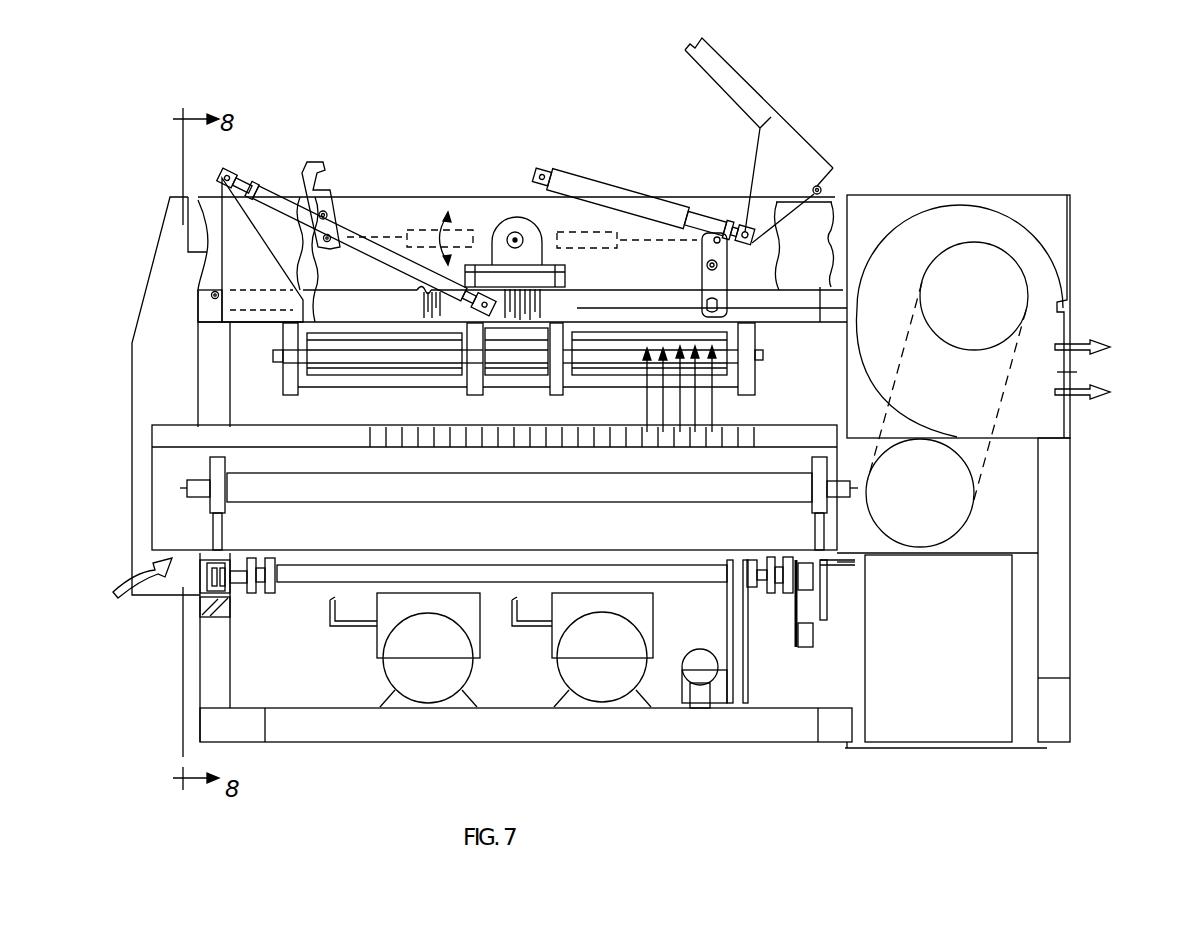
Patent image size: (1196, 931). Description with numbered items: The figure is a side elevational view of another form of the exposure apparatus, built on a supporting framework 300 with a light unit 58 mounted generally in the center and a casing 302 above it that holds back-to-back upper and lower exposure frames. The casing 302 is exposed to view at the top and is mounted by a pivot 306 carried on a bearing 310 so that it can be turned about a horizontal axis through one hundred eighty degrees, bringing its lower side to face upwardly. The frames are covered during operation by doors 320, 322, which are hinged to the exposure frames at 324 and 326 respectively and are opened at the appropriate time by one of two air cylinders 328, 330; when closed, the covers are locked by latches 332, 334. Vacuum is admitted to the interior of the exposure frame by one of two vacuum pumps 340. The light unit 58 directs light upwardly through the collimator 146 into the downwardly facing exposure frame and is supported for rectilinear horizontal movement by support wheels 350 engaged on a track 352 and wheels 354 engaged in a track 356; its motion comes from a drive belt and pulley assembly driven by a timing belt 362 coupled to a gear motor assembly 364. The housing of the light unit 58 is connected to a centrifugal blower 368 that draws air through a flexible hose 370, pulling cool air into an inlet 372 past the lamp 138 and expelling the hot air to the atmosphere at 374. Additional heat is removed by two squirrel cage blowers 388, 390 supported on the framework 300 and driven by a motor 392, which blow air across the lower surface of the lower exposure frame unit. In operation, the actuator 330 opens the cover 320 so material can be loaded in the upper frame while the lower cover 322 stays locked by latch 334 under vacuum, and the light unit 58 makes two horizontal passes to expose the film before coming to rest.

The light unit 58 is at (146, 464).
The lamp 138 is at (715, 495).
The collimator 146 is at (358, 428).
The supporting framework 300 is at (207, 647).
The casing 302 is at (406, 193).
The pivot 306 is at (498, 228).
The bearing 310 is at (515, 231).
The door 320 is at (740, 73).
The door 322 is at (803, 302).
The hinge 324 is at (827, 185).
The hinge 326 is at (212, 296).
The air cylinder 328 is at (340, 228).
The air cylinder 330 is at (593, 187).
The latch 332 is at (296, 172).
The latch 334 is at (698, 265).
The vacuum pump 340 is at (580, 662).
The support wheels 350 is at (787, 600).
The track 352 is at (810, 598).
The wheels 354 is at (232, 590).
The track 356 is at (200, 608).
The timing belt 362 is at (733, 613).
The gear motor assembly 364 is at (715, 665).
The centrifugal blower 368 is at (1027, 228).
The flexible hose 370 is at (987, 460).
The inlet 372 is at (177, 550).
The exhaust to atmosphere 374 is at (1078, 375).
The squirrel cage blower 388 is at (443, 368).
The squirrel cage blower 390 is at (617, 370).
The motor 392 is at (533, 368).